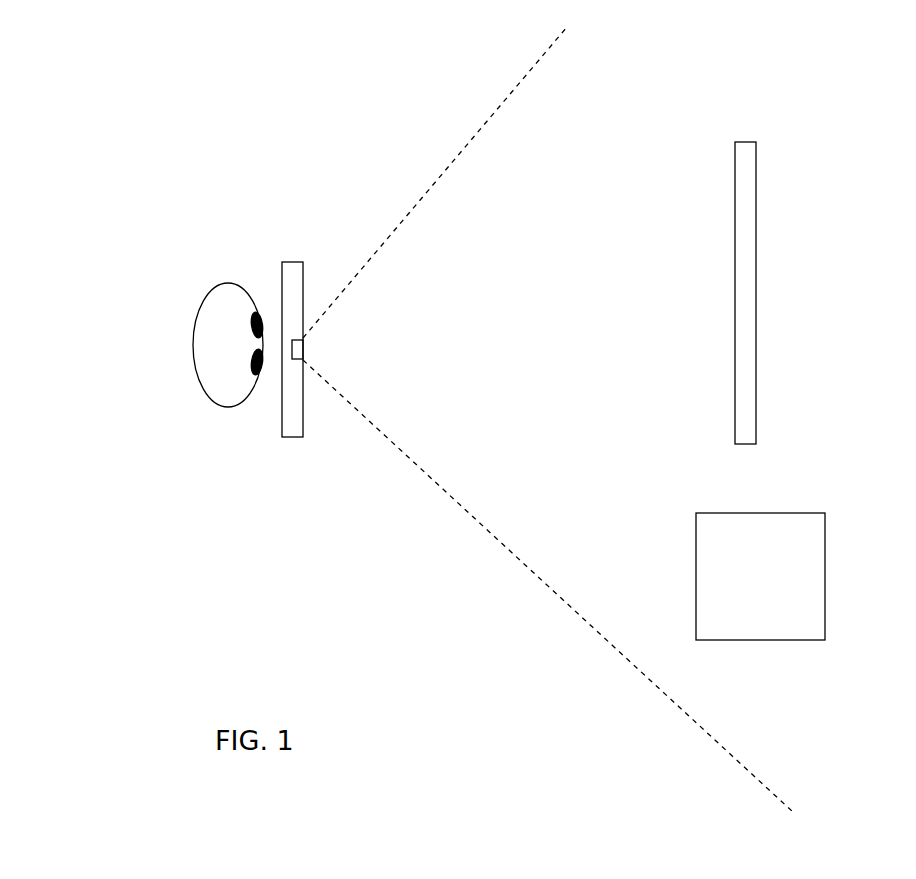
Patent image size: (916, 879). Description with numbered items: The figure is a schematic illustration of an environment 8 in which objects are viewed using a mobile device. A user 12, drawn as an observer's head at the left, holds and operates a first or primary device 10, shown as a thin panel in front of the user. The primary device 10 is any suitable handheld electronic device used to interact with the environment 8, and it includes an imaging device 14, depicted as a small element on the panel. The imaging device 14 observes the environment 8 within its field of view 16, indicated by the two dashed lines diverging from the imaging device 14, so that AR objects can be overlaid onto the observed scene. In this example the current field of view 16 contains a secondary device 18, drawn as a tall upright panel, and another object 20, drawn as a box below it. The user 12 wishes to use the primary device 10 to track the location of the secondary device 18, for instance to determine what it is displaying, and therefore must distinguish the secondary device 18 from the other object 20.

The environment 8 is at (256, 570).
The primary device 10 is at (289, 262).
The user 12 is at (213, 390).
The imaging device 14 is at (320, 350).
The field of view 16 is at (494, 290).
The secondary device 18 is at (756, 160).
The other object 20 is at (825, 550).